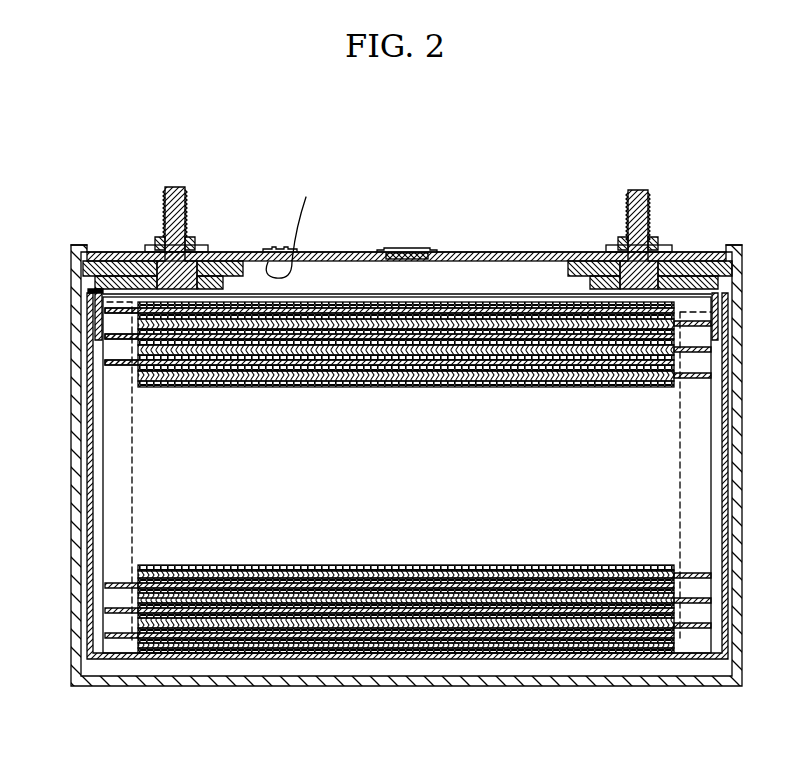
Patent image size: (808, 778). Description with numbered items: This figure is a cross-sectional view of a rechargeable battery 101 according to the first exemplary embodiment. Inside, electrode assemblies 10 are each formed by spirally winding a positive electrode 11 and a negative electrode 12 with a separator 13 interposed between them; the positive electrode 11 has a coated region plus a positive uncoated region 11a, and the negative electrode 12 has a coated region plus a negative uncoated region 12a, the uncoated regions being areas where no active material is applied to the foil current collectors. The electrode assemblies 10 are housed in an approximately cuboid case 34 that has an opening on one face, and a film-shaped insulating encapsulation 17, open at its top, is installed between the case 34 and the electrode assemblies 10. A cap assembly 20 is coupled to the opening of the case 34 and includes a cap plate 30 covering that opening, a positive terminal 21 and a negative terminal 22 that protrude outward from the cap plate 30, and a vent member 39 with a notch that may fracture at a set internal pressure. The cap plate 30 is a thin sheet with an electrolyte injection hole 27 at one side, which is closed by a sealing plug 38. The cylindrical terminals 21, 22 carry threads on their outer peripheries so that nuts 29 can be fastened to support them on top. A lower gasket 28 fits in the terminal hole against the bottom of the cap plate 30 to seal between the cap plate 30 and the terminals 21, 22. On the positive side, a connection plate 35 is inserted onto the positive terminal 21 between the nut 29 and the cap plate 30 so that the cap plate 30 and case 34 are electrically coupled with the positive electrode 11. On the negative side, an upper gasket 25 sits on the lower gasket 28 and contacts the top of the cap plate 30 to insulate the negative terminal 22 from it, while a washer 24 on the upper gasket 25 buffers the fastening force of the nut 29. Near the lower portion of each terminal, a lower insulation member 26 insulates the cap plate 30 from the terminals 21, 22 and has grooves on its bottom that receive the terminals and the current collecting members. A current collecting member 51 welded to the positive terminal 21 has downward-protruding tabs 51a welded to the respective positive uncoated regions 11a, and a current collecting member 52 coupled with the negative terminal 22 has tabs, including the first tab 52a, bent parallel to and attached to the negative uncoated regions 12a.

The rechargeable battery 101 is at (426, 129).
The electrode assembly 10 is at (519, 546).
The positive electrode 11 is at (238, 654).
The positive uncoated region 11a is at (124, 653).
The negative electrode 12 is at (290, 645).
The negative uncoated region 12a is at (688, 630).
The separator 13 is at (407, 625).
The insulating encapsulation 17 is at (735, 491).
The cap assembly 20 is at (232, 246).
The positive terminal 21 is at (177, 187).
The negative terminal 22 is at (630, 197).
The washer 24 is at (618, 249).
The upper gasket 25 is at (672, 254).
The lower insulation member 26 is at (86, 266).
The electrolyte injection hole 27 is at (292, 224).
The lower gasket 28 is at (150, 259).
The nut 29 is at (157, 238).
The cap plate 30 is at (460, 252).
The case 34 is at (729, 406).
The connection plate 35 is at (150, 250).
The sealing plug 38 is at (273, 249).
The vent member 39 is at (410, 250).
The current collecting member 51 is at (90, 291).
The tab 51a is at (114, 378).
The current collecting member 52 is at (722, 297).
The first tab 52a is at (700, 368).